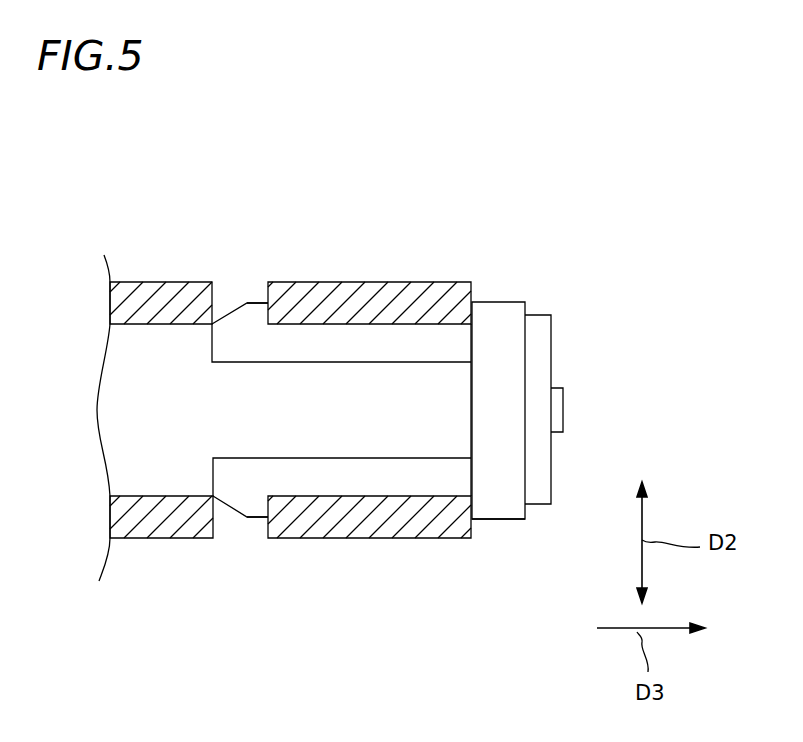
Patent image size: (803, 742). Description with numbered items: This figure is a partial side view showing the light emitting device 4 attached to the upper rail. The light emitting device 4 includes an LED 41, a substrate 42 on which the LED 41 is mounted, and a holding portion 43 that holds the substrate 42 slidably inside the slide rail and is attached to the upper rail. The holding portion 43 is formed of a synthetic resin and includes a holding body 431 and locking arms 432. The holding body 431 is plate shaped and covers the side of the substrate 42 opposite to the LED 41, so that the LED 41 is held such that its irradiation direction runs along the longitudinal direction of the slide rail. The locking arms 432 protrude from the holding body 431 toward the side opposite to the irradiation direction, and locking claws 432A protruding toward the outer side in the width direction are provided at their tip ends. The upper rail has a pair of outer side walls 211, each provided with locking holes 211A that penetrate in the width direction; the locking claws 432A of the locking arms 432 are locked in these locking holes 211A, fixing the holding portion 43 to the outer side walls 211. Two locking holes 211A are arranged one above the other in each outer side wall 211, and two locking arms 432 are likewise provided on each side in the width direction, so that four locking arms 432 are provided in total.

The light emitting device 4 is at (648, 265).
The LED 41 is at (557, 410).
The substrate 42 is at (543, 340).
The holding portion 43 is at (515, 303).
The holding body 431 is at (494, 505).
The locking arm 432 is at (385, 335).
The locking claw 432A is at (233, 300).
The outer side wall 211 is at (166, 282).
The locking hole 211A is at (252, 283).